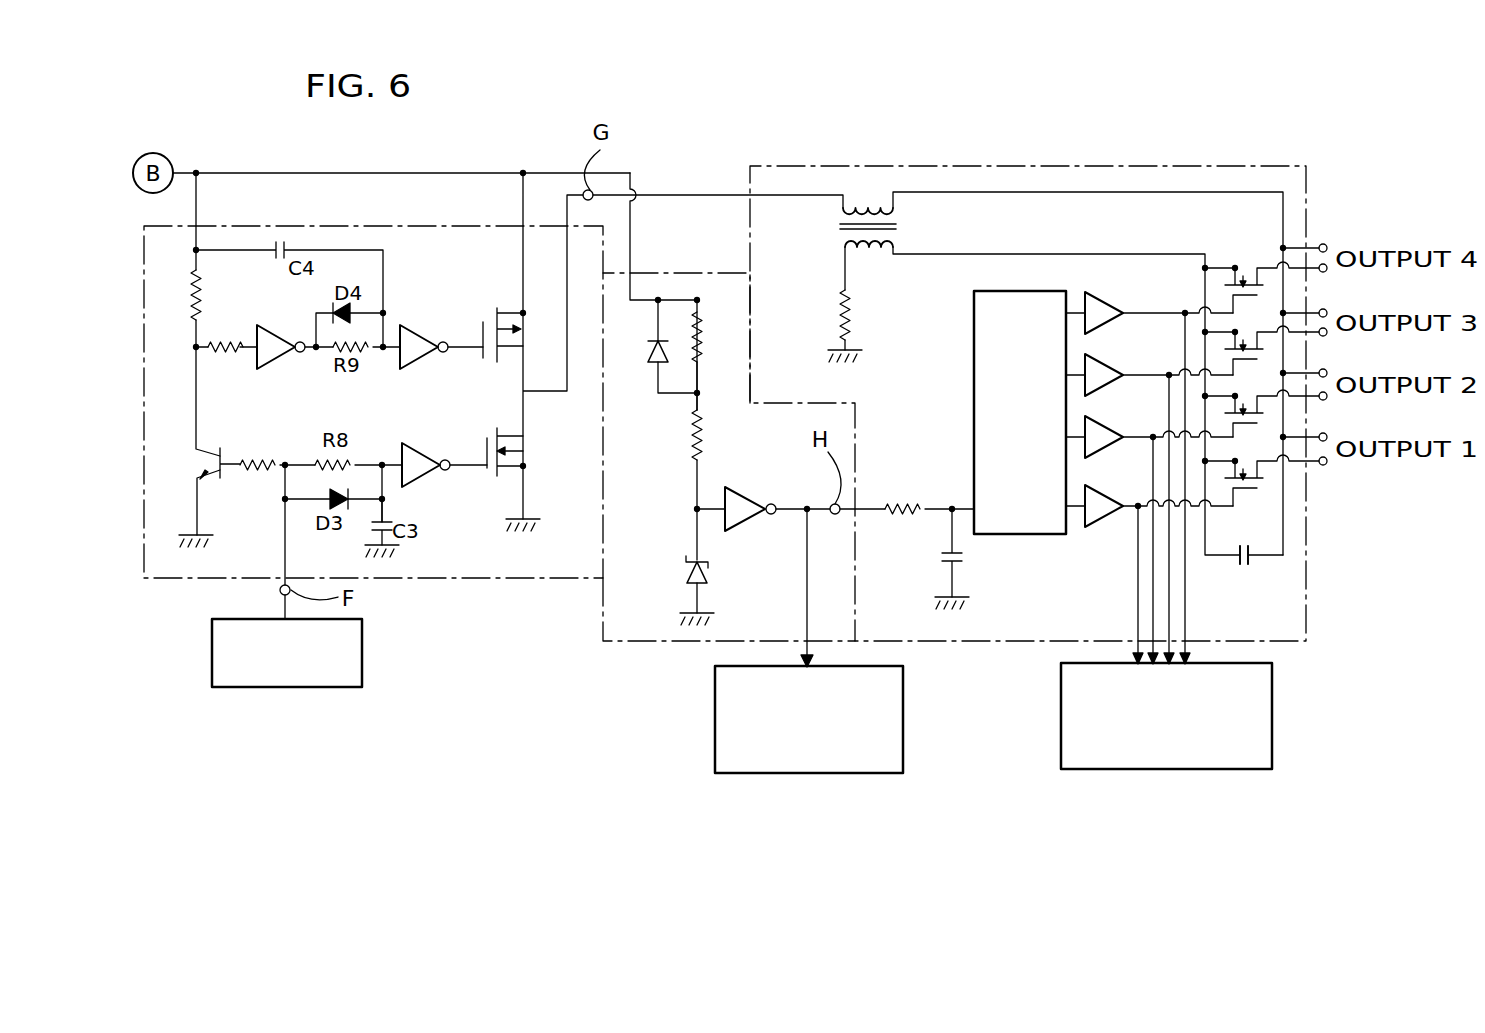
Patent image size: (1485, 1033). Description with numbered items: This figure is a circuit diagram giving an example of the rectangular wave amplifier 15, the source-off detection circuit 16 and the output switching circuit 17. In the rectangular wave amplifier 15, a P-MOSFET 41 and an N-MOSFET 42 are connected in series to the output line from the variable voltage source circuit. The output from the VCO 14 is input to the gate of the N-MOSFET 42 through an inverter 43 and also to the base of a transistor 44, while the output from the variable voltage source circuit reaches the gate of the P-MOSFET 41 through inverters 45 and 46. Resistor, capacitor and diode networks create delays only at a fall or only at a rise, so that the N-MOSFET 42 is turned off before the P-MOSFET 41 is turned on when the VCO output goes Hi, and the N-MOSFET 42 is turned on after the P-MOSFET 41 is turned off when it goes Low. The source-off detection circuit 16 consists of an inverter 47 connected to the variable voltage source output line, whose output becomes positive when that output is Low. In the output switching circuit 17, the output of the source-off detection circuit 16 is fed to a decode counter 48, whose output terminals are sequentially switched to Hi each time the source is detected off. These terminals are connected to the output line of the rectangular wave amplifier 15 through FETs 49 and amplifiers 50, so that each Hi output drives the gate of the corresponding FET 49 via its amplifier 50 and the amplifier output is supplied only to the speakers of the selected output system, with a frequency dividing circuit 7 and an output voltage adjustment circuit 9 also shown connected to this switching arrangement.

The frequency dividing circuit 7 is at (903, 740).
The output voltage adjustment circuit 9 is at (1272, 727).
The VCO 14 is at (362, 657).
The rectangular wave amplifier 15 is at (538, 578).
The source-off detection circuit 16 is at (648, 641).
The output switching circuit 17 is at (1028, 641).
The P-MOSFET 41 is at (488, 322).
The N-MOSFET 42 is at (492, 438).
The inverter 43 is at (438, 468).
The transistor 44 is at (212, 450).
The inverter 45 is at (283, 333).
The inverter 46 is at (418, 333).
The inverter 47 is at (752, 521).
The decode counter 48 is at (1028, 535).
The FET 49 is at (1257, 485).
The amplifier 50 is at (1105, 519).